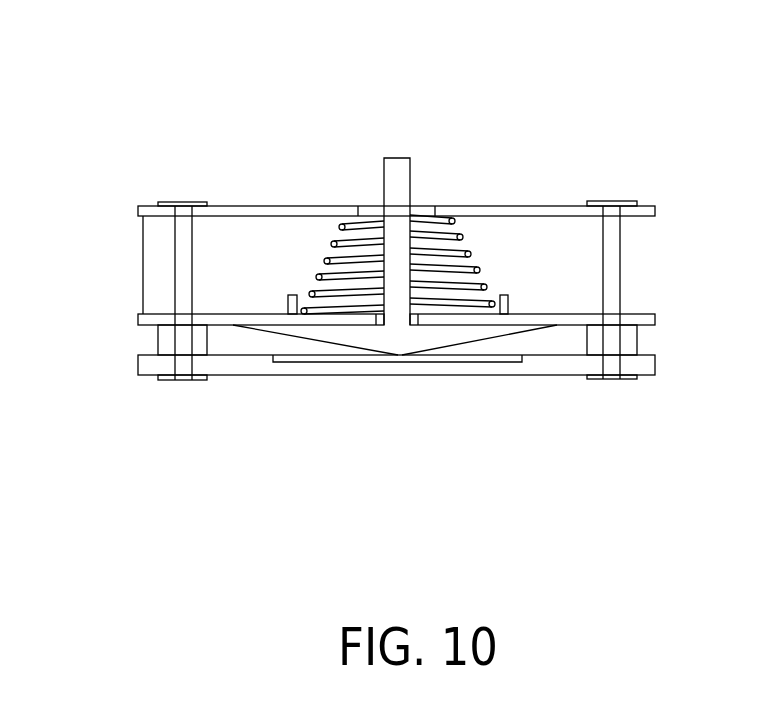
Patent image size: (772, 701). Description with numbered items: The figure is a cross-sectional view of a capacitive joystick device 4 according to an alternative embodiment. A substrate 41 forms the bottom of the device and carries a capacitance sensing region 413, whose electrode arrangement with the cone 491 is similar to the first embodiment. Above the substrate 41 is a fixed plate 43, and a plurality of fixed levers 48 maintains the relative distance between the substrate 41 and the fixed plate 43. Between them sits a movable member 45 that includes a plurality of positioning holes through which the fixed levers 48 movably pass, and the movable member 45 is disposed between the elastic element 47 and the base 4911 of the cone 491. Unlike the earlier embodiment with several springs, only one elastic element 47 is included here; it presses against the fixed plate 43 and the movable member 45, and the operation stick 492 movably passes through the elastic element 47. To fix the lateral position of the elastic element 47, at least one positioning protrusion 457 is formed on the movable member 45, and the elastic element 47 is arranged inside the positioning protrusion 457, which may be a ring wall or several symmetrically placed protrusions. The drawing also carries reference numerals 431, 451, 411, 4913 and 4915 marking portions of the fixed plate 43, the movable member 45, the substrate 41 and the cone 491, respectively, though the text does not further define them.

The capacitive joystick device 4 is at (694, 43).
The substrate 41 is at (145, 365).
The recess of bottom plate 411 is at (410, 359).
The capacitance sensing region 413 is at (333, 360).
The fixed plate 43 is at (145, 212).
The through hole of top plate 431 is at (425, 208).
The movable member 45 is at (145, 322).
The opening of middle plate 451 is at (381, 320).
The positioning protrusion 457 is at (288, 300).
The elastic element 47 is at (473, 252).
The fixed lever 48 is at (177, 237).
The cone 491 is at (415, 401).
The base of the cone 4911 is at (293, 325).
The apex of pressing member 4913 is at (397, 357).
The second arm of pressing member 4915 is at (497, 337).
The operation stick 492 is at (400, 170).